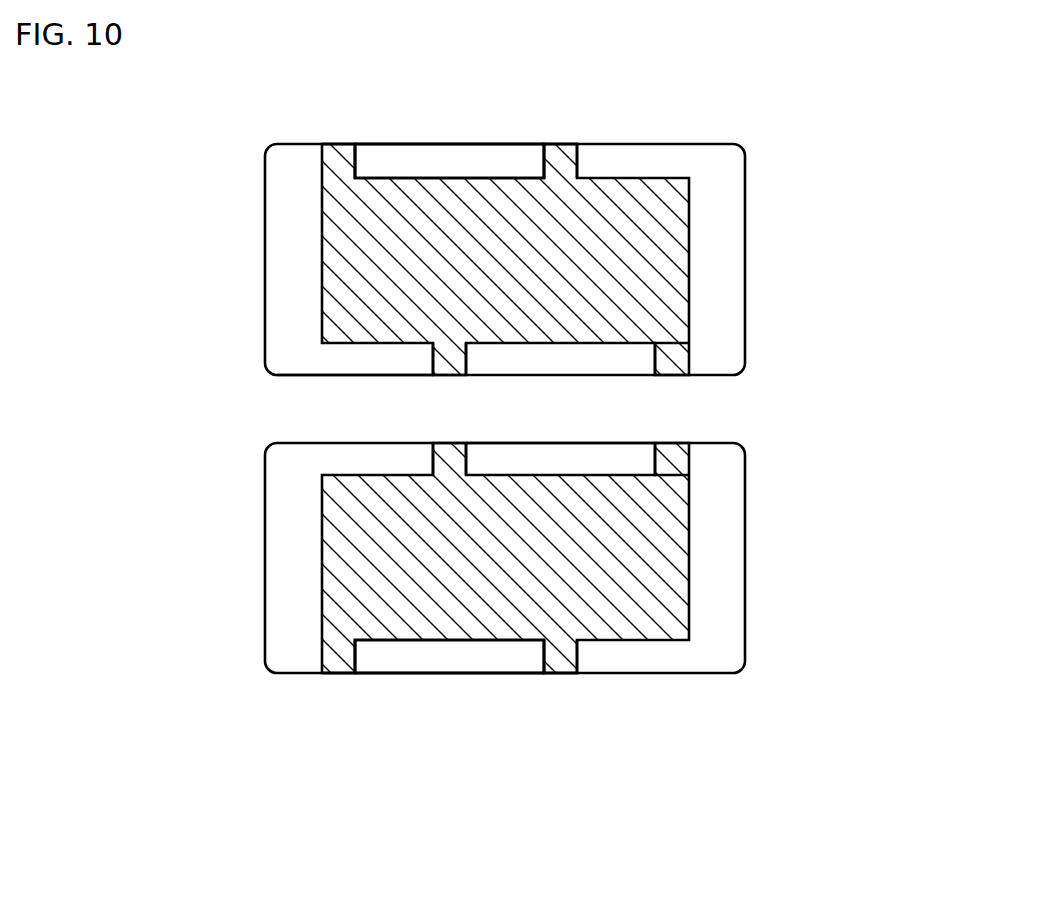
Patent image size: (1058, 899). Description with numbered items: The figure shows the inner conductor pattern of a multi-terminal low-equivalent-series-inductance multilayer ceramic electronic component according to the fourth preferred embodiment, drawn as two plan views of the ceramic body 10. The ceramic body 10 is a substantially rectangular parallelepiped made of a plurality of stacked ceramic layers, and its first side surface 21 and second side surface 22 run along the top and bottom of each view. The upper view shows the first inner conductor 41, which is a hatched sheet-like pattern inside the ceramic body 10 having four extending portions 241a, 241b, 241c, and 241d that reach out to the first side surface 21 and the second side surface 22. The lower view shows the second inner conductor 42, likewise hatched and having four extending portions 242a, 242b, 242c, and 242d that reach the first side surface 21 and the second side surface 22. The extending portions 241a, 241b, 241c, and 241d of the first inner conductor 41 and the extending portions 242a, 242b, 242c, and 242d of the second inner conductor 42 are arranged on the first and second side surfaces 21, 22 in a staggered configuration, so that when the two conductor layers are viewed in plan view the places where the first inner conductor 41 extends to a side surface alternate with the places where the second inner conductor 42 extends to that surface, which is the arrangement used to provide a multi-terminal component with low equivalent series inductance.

The ceramic body 10 is at (760, 232).
The first side surface 21 is at (497, 144).
The second side surface 22 is at (293, 375).
The first inner conductor 41 is at (455, 178).
The second inner conductor 42 is at (394, 640).
The extending portion 241a is at (366, 146).
The extending portion 241b is at (583, 160).
The extending portion 241c is at (467, 355).
The extending portion 241d is at (690, 352).
The extending portion 242a is at (432, 459).
The extending portion 242b is at (653, 458).
The extending portion 242c is at (358, 665).
The extending portion 242d is at (579, 657).